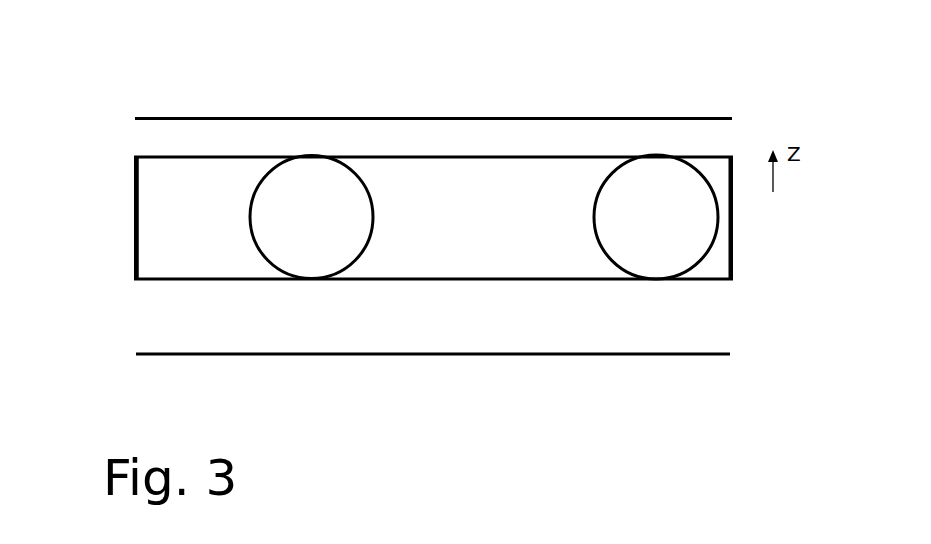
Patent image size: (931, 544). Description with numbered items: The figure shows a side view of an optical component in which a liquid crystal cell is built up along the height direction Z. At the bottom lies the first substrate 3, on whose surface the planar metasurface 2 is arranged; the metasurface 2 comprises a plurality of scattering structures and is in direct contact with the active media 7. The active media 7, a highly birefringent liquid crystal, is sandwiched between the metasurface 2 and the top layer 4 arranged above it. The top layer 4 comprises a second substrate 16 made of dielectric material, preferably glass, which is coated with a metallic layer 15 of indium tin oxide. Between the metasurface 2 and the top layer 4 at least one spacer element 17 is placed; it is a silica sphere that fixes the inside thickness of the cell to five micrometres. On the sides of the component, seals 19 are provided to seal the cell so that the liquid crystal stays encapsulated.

The planar metasurface 2 is at (149, 280).
The first substrate 3 is at (664, 327).
The top layer 4 is at (135, 118).
The active media 7 is at (156, 204).
The metallic layer 15 is at (225, 118).
The second substrate 16 is at (146, 142).
The spacer element 17 is at (663, 190).
The seal 19 is at (145, 236).